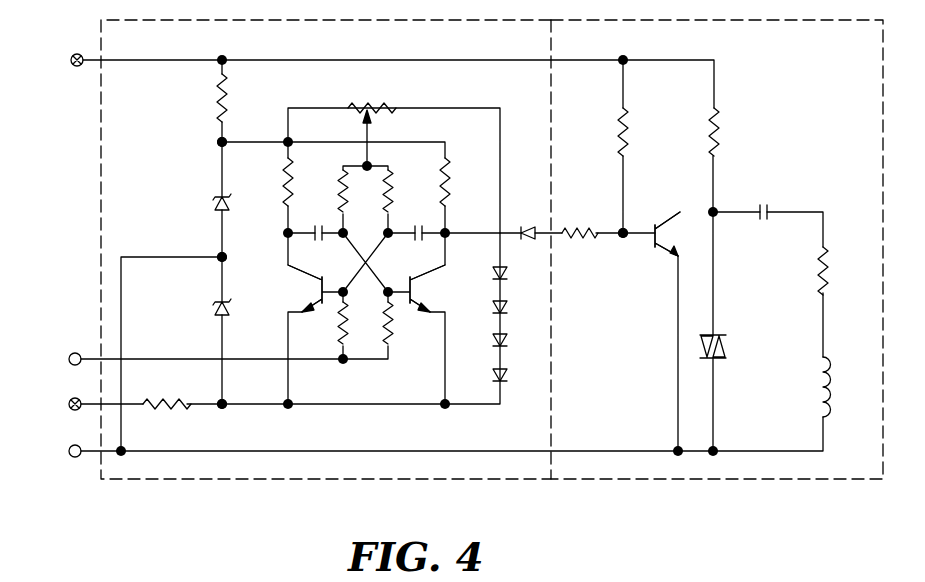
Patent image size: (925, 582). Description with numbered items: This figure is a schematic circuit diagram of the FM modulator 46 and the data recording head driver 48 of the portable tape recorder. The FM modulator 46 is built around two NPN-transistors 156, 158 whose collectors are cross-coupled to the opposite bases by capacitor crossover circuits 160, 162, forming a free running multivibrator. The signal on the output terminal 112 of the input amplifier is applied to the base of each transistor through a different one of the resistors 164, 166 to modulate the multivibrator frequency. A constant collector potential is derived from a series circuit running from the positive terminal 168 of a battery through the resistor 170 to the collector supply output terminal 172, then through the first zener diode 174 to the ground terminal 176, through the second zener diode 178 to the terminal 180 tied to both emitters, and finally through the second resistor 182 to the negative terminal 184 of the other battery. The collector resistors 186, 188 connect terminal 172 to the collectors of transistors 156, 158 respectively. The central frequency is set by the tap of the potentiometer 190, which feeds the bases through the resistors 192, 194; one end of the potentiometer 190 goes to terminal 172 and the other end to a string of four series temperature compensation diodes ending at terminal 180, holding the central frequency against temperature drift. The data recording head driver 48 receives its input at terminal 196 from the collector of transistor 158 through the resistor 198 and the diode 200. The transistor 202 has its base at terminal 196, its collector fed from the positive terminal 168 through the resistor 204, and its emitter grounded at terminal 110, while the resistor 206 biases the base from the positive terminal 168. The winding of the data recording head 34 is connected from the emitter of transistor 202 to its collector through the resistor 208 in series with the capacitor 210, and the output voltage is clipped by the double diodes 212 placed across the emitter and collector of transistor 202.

The data recording head 34 is at (818, 385).
The FM modulator 46 is at (410, 32).
The data recording head driver 48 is at (782, 32).
The terminal 110 is at (70, 445).
The output terminal 112 is at (70, 353).
The NPN-transistor 156 is at (318, 293).
The NPN-transistor 158 is at (414, 293).
The capacitor crossover circuit 160 is at (325, 224).
The capacitor crossover circuit 162 is at (425, 224).
The resistor 164 is at (337, 320).
The resistor 166 is at (392, 320).
The positive terminal 168 is at (71, 54).
The resistor 170 is at (216, 95).
The collector supply output terminal 172 is at (216, 142).
The first zener diode 174 is at (215, 203).
The ground terminal 176 is at (216, 254).
The second zener diode 178 is at (215, 308).
The terminal 180 is at (222, 412).
The second resistor 182 is at (172, 398).
The negative terminal 184 is at (70, 398).
The collector resistor 186 is at (284, 184).
The collector resistor 188 is at (450, 184).
The potentiometer 190 is at (371, 100).
The resistor 192 is at (340, 186).
The resistor 194 is at (392, 186).
The input terminal 196 is at (619, 240).
The resistor 198 is at (590, 227).
The diode 200 is at (535, 226).
The NPN-transistor 202 is at (660, 250).
The resistor 204 is at (722, 130).
The resistor 206 is at (630, 130).
The resistor 208 is at (818, 270).
The capacitor 210 is at (760, 204).
The double diodes 212 is at (728, 348).